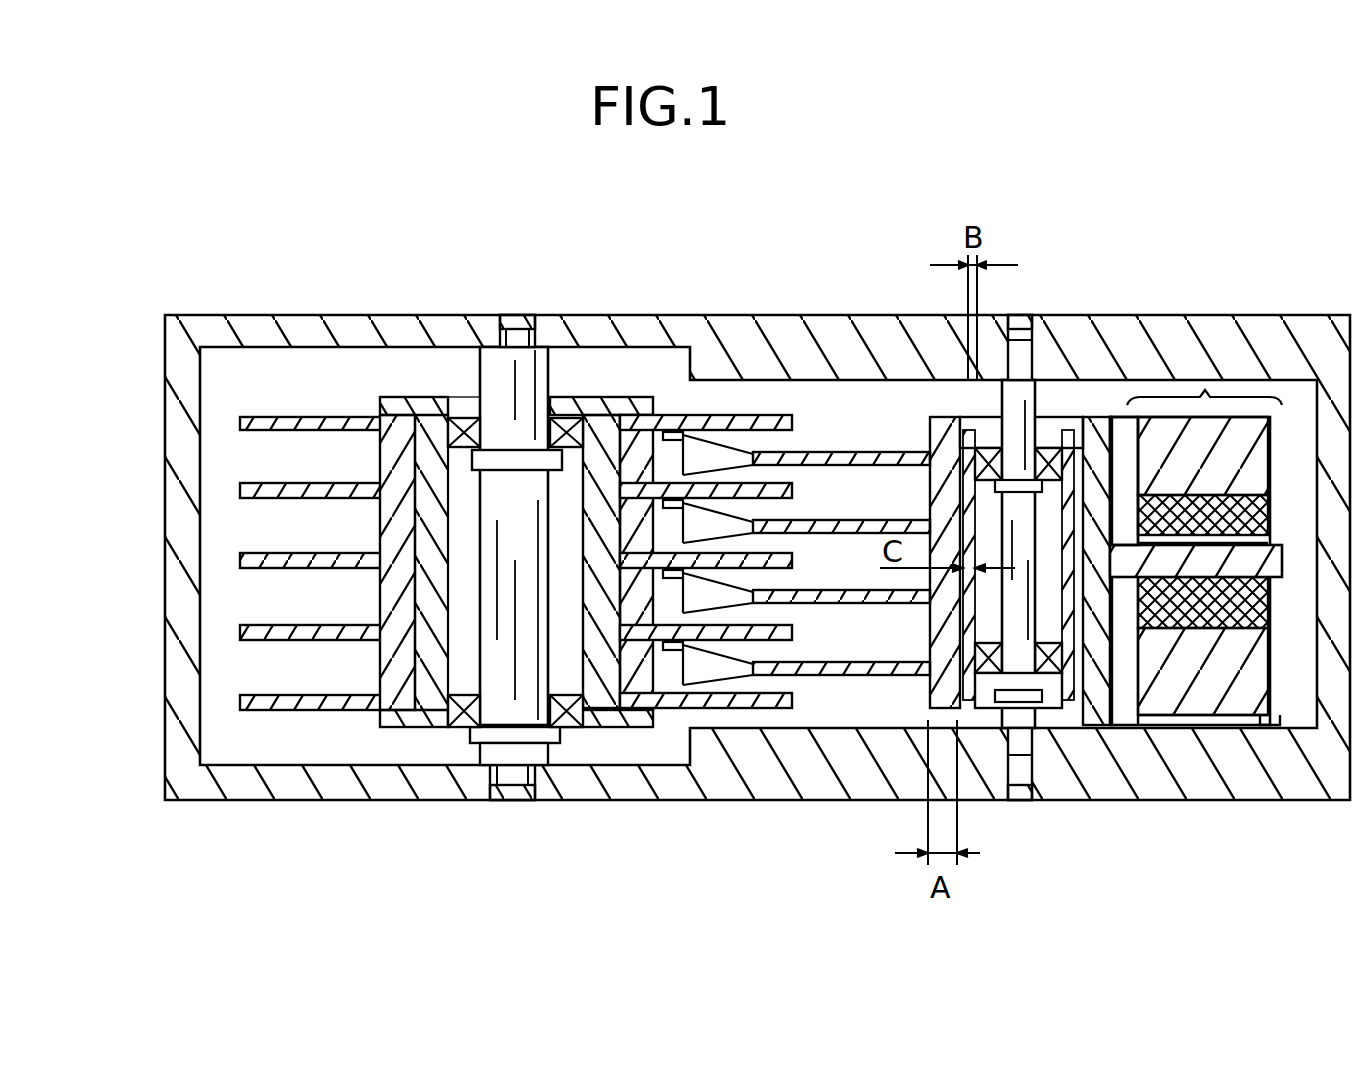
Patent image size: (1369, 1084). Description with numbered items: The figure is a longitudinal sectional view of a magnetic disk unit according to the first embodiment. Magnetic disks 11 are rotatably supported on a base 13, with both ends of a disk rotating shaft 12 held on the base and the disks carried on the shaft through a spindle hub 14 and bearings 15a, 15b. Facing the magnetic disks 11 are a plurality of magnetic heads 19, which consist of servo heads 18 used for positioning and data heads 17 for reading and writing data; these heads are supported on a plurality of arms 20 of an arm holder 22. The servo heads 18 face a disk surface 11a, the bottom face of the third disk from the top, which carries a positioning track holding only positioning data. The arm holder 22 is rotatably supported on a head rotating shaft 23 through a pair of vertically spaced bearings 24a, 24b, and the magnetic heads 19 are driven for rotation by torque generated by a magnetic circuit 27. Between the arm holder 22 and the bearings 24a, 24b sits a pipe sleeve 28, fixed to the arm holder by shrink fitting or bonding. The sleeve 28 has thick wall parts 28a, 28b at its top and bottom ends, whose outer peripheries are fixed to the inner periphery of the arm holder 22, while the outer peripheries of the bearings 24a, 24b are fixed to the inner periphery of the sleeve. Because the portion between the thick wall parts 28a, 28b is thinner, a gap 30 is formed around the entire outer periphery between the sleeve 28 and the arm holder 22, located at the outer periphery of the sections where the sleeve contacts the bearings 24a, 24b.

The magnetic disks 11 is at (306, 415).
The disk surface 11a is at (788, 566).
The disk rotating shaft 12 is at (487, 370).
The base 13 is at (212, 310).
The spindle hub 14 is at (410, 725).
The bearing 15a is at (565, 400).
The bearing 15b is at (465, 740).
The data heads 17 is at (682, 577).
The servo heads 18 is at (688, 577).
The magnetic heads 19 is at (680, 430).
The arms 20 is at (875, 680).
The arm holder 22 is at (1003, 440).
The head rotating shaft 23 is at (1030, 690).
The bearing 24a is at (1055, 440).
The bearing 24b is at (1075, 720).
The magnetic circuit 27 is at (1205, 390).
The pipe sleeve 28 is at (1130, 690).
The thick wall part 28a is at (1138, 440).
The thick wall part 28b is at (1000, 720).
The gap 30 is at (935, 450).